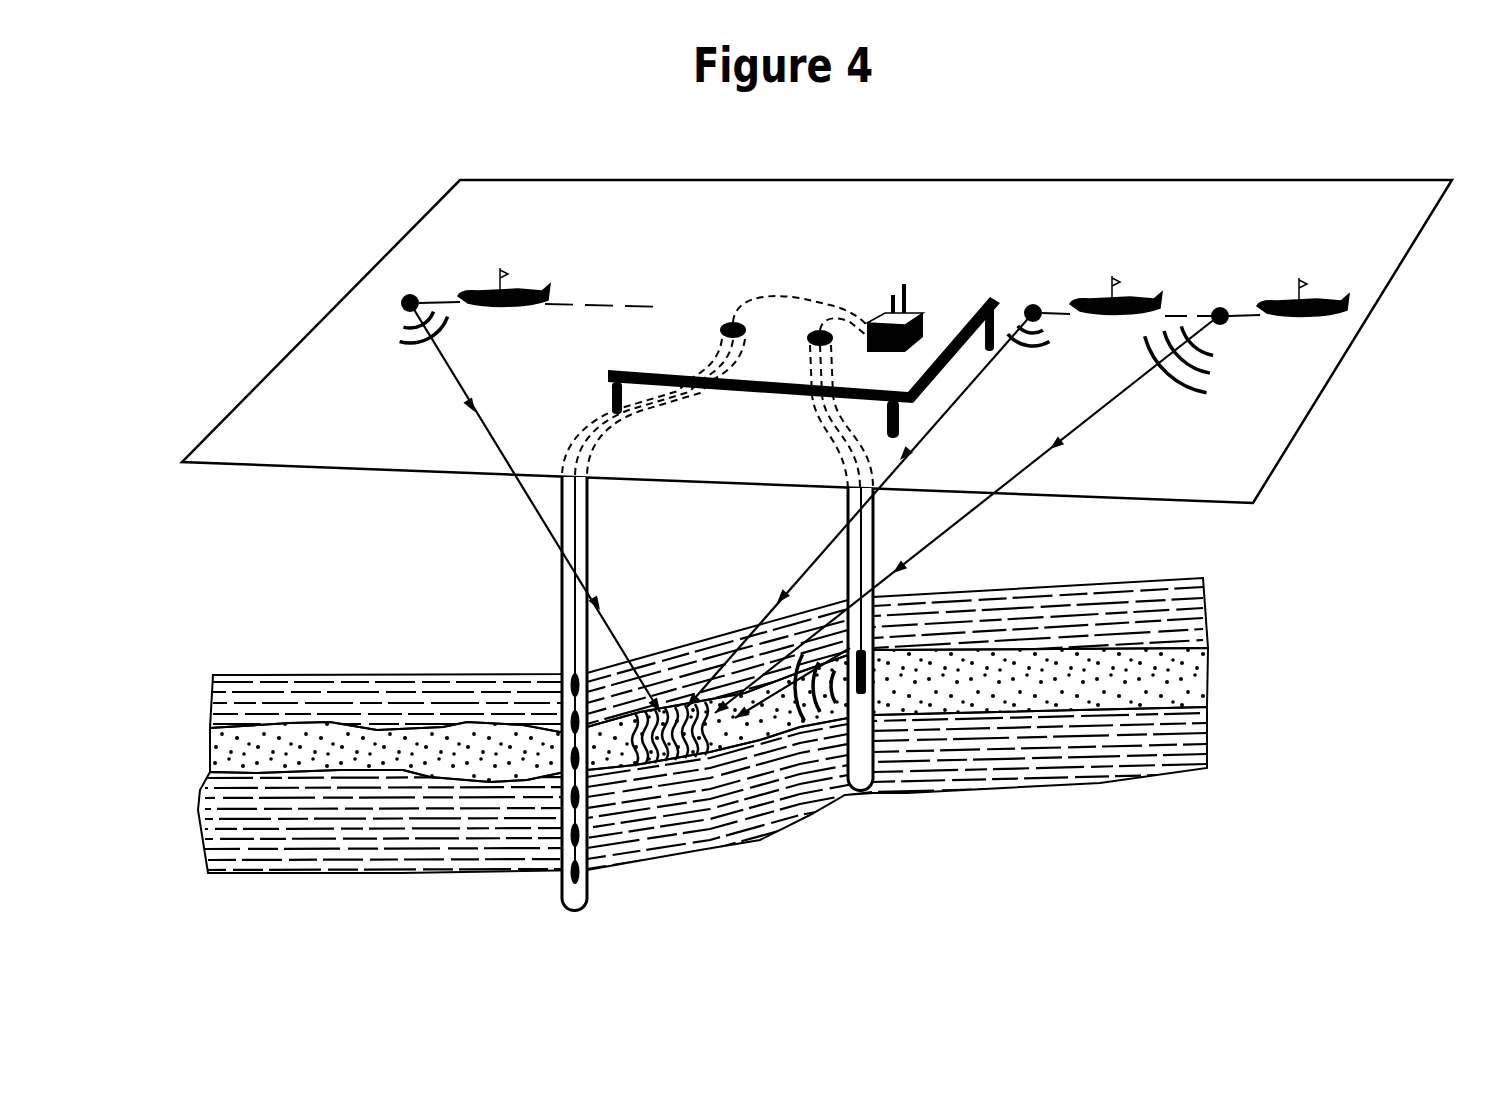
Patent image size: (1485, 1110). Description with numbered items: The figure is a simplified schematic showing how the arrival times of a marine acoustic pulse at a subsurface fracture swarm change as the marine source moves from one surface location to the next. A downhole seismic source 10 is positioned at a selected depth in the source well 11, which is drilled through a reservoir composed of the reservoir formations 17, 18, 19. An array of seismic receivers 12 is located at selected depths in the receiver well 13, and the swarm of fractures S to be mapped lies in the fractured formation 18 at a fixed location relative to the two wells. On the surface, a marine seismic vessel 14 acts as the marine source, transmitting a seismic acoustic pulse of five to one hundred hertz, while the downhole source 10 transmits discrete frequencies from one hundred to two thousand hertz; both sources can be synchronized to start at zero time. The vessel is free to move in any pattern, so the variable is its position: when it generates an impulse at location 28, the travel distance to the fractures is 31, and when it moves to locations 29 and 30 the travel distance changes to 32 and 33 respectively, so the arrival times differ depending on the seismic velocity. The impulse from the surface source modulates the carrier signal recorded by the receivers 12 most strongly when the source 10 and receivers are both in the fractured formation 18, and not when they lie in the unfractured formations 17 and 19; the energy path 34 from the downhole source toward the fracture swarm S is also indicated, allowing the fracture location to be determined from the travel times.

The downhole seismic source 10 is at (861, 685).
The source well 11 is at (778, 602).
The array of seismic receivers 12 is at (536, 778).
The receiver well 13 is at (549, 693).
The marine seismic vessel 14 is at (1306, 286).
The reservoir formation 17 is at (702, 790).
The reservoir formation 18 is at (709, 715).
The reservoir formation 19 is at (709, 661).
The marine source location 28 is at (1203, 324).
The marine source location 29 is at (1110, 302).
The marine source location 30 is at (530, 300).
The travel distance 31 is at (964, 517).
The travel distance 32 is at (953, 404).
The travel distance 33 is at (537, 509).
The seismic energy from downhole source 34 is at (791, 699).
The swarm of fractures S is at (678, 804).